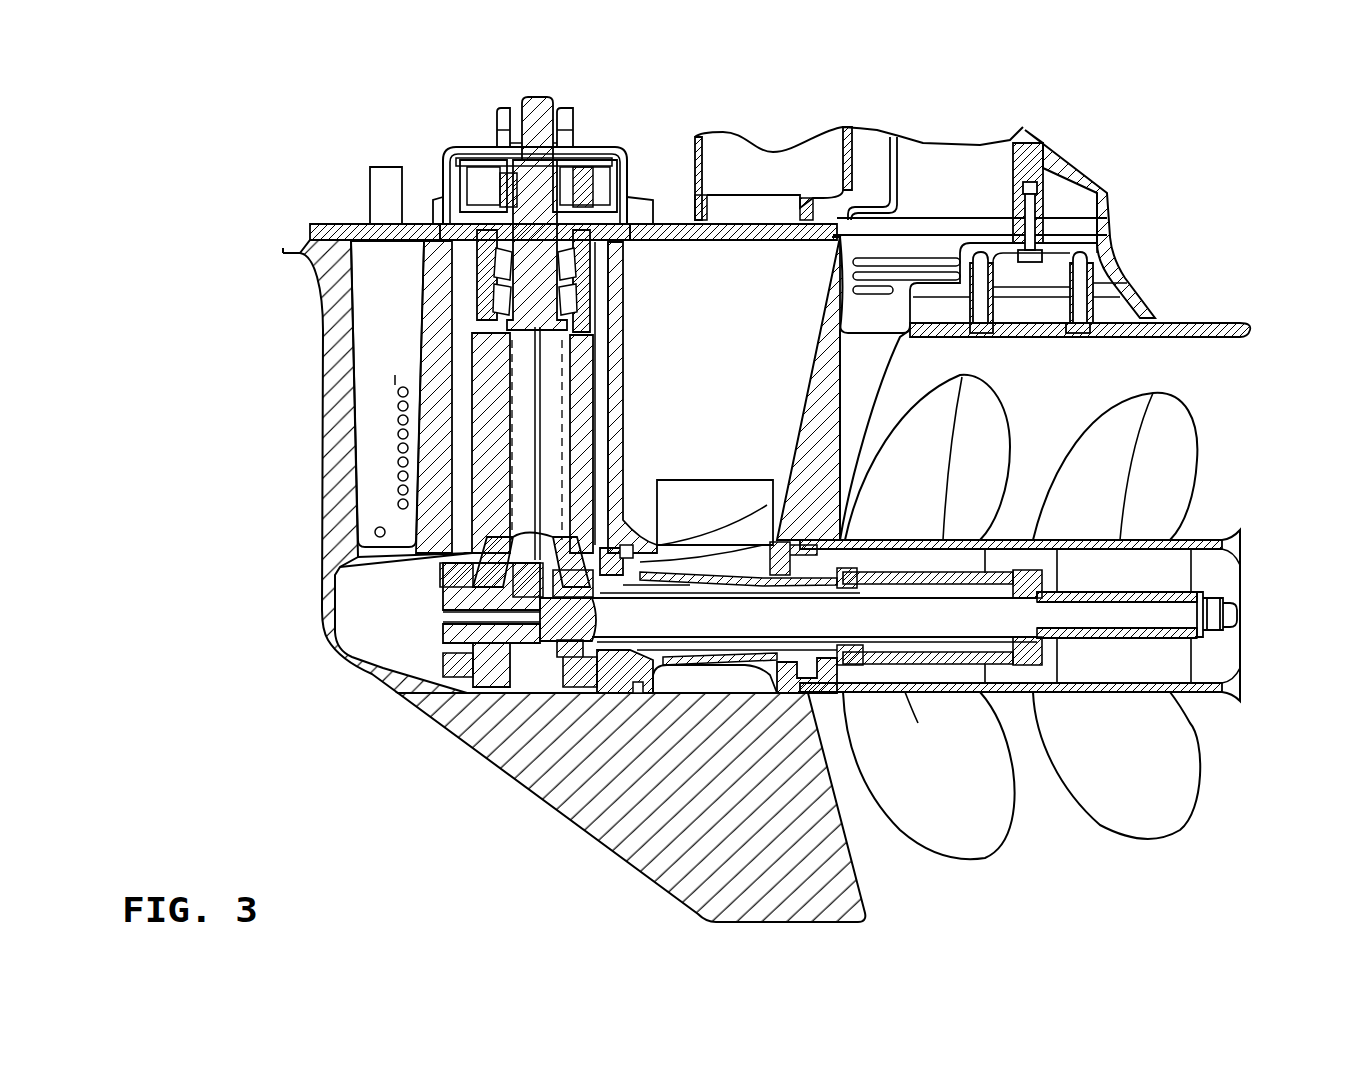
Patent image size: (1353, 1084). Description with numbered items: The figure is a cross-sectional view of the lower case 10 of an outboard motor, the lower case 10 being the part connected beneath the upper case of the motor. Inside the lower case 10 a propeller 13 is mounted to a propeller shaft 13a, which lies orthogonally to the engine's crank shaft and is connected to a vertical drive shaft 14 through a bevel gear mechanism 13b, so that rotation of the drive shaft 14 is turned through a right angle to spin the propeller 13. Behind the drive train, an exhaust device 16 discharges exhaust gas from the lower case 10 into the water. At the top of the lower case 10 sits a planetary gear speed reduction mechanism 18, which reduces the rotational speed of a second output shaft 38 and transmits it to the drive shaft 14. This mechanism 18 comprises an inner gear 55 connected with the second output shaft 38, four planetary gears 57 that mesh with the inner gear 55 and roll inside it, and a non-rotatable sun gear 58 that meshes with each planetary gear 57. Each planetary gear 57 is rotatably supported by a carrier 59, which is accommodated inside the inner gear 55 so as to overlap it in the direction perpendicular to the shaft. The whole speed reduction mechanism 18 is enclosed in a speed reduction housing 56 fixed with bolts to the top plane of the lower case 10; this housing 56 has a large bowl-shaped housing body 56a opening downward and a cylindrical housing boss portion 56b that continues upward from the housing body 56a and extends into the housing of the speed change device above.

The lower case 10 is at (320, 375).
The propeller 13 is at (1218, 432).
The propeller shaft 13a is at (907, 695).
The bevel gear mechanism 13b is at (563, 668).
The drive shaft 14 is at (565, 400).
The exhaust device 16 is at (855, 158).
The planetary gear speed reduction mechanism 18 is at (440, 150).
The second output shaft 38 is at (520, 97).
The inner gear 55 is at (600, 152).
The speed reduction housing 56 is at (438, 190).
The housing body 56a is at (622, 155).
The housing boss portion 56b is at (575, 120).
The planetary gear 57 is at (612, 188).
The sun gear 58 is at (490, 186).
The carrier 59 is at (474, 162).